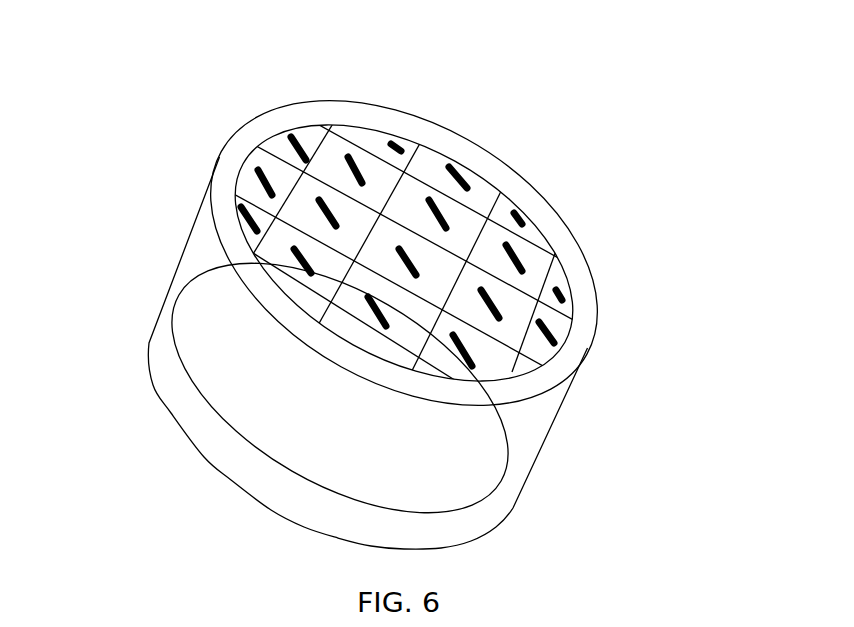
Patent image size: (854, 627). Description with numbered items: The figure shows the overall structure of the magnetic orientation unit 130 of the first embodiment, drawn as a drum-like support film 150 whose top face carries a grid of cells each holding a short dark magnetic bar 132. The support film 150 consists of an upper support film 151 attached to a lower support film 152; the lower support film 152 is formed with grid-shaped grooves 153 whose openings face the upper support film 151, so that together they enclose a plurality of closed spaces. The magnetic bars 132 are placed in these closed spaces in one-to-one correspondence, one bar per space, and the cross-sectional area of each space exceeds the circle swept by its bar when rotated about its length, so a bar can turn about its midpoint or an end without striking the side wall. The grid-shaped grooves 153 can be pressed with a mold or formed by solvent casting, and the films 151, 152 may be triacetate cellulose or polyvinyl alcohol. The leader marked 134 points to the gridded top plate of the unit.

The magnetic orientation unit 130 is at (448, 70).
The magnetic bar 132 is at (553, 330).
The top plate grid 134 is at (523, 195).
The support film 150 is at (442, 253).
The upper support film 151 is at (566, 297).
The lower support film 152 is at (208, 405).
The grid-shaped groove 153 is at (543, 253).